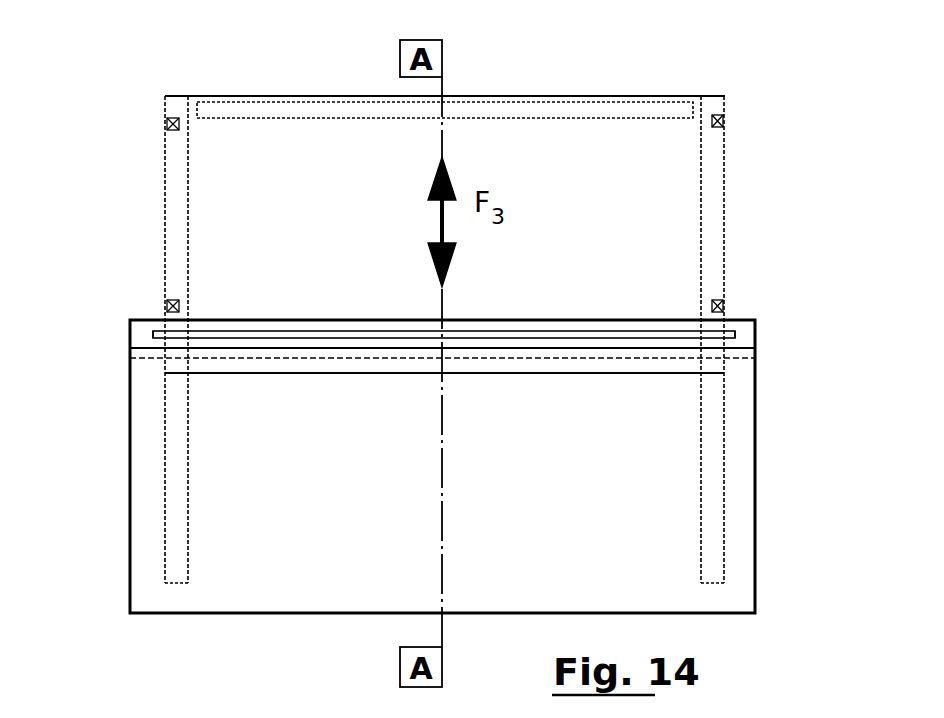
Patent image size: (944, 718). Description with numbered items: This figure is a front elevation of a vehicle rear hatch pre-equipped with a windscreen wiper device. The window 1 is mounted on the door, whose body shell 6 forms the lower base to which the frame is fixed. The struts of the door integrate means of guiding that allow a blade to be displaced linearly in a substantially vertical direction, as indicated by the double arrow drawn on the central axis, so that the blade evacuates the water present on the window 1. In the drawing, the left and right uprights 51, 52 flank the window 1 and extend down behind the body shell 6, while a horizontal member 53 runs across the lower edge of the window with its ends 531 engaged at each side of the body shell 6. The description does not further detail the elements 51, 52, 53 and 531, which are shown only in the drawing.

The window 1 is at (268, 130).
The left leg 51 is at (182, 177).
The right leg 52 is at (708, 153).
The bar 53 is at (307, 333).
The bar ends 531 is at (153, 335).
The body shell 6 is at (130, 545).